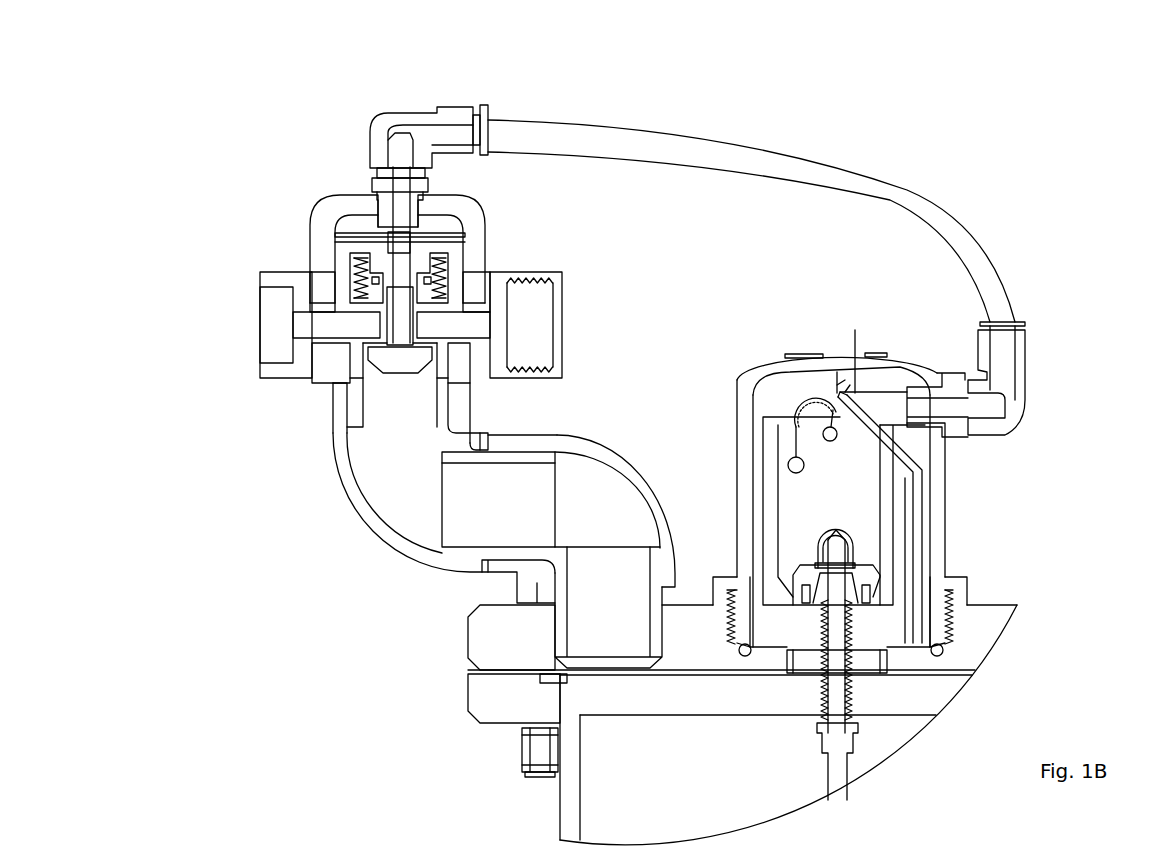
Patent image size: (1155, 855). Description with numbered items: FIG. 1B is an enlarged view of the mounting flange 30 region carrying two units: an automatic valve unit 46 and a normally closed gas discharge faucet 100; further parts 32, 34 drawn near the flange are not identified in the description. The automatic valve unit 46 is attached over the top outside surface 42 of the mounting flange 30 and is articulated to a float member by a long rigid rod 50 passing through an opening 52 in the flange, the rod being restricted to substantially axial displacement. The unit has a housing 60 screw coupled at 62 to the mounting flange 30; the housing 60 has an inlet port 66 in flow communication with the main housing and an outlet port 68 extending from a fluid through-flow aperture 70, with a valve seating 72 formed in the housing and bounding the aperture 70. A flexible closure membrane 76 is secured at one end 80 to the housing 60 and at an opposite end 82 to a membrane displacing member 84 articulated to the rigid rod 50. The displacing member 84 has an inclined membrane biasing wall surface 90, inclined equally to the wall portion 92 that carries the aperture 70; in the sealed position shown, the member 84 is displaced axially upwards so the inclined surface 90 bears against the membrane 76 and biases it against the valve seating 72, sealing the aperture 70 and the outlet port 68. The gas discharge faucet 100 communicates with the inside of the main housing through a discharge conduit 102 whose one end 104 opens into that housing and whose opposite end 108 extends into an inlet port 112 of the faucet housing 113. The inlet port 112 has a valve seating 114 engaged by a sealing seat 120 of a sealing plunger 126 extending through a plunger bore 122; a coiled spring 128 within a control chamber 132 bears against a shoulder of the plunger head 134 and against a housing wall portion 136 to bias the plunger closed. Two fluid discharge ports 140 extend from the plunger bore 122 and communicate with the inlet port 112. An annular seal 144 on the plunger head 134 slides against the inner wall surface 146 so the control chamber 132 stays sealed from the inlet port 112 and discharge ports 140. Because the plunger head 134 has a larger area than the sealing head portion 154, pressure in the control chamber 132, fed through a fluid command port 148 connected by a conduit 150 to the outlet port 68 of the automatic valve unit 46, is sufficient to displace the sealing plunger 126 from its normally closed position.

The mounting flange 30 is at (475, 630).
The bolt 32 is at (535, 755).
The lower base block 34 is at (485, 722).
The top outside surface 42 is at (992, 605).
The automatic valve unit 46 is at (866, 329).
The rigid rod 50 is at (840, 768).
The opening 52 is at (867, 662).
The housing 60 is at (932, 493).
The screw coupling 62 is at (740, 597).
The inlet port 66 is at (810, 618).
The outlet port 68 is at (890, 410).
The fluid through-flow aperture 70 is at (855, 393).
The valve seating 72 is at (793, 405).
The flexible closure membrane 76 is at (742, 378).
The one end of membrane 80 is at (913, 470).
The opposite end of membrane 82 is at (789, 458).
The membrane displacing member 84 is at (890, 540).
The inclined membrane biasing wall surface 90 is at (843, 385).
The wall portion 92 is at (900, 450).
The gas discharge faucet 100 is at (492, 210).
The discharge conduit 102 is at (412, 515).
The one end of discharge conduit 104 is at (605, 660).
The opposite end of discharge conduit 108 is at (358, 438).
The inlet port 112 is at (403, 398).
The housing 113 is at (443, 373).
The valve seating 114 is at (495, 352).
The sealing seat 120 is at (340, 338).
The plunger bore 122 is at (335, 300).
The sealing plunger 126 is at (440, 290).
The coiled spring 128 is at (365, 287).
The control chamber 132 is at (452, 223).
The plunger head 134 is at (362, 240).
The housing wall portion 136 is at (312, 252).
The fluid discharge ports 140 is at (433, 350).
The annular seal (O-ring) 144 is at (497, 230).
The inner wall surface 146 is at (457, 256).
The fluid command port 148 is at (427, 187).
The conduit 150 is at (790, 163).
The sealing head portion 154 is at (398, 363).